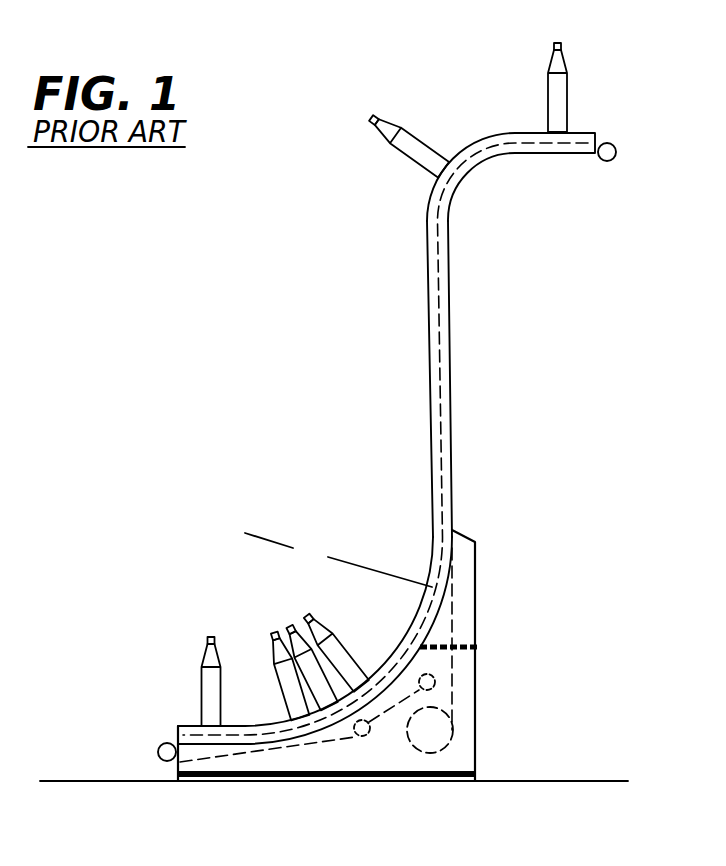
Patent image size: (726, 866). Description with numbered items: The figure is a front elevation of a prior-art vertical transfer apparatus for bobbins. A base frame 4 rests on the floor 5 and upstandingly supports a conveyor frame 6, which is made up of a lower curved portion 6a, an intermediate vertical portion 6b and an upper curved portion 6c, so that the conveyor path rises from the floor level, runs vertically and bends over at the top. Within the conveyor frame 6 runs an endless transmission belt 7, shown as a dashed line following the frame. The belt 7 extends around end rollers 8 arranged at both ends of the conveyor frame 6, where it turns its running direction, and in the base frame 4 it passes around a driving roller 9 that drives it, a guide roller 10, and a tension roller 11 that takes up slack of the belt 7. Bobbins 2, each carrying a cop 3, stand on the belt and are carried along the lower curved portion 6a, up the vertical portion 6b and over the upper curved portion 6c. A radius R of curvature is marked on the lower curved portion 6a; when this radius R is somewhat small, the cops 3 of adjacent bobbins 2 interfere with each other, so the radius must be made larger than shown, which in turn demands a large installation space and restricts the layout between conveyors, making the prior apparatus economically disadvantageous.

The bobbin 2 is at (558, 46).
The cop 3 is at (570, 96).
The base frame 4 is at (474, 601).
The floor 5 is at (86, 780).
The conveyor frame 6 is at (386, 402).
The lower curved portion 6a is at (270, 724).
The intermediate vertical portion 6b is at (427, 324).
The upper curved portion 6c is at (493, 133).
The endless transmission belt 7 is at (441, 418).
The end roller 8 is at (617, 148).
The driving roller 9 is at (441, 735).
The guide roller 10 is at (362, 738).
The tension roller 11 is at (440, 683).
The radius of curvature R is at (338, 560).